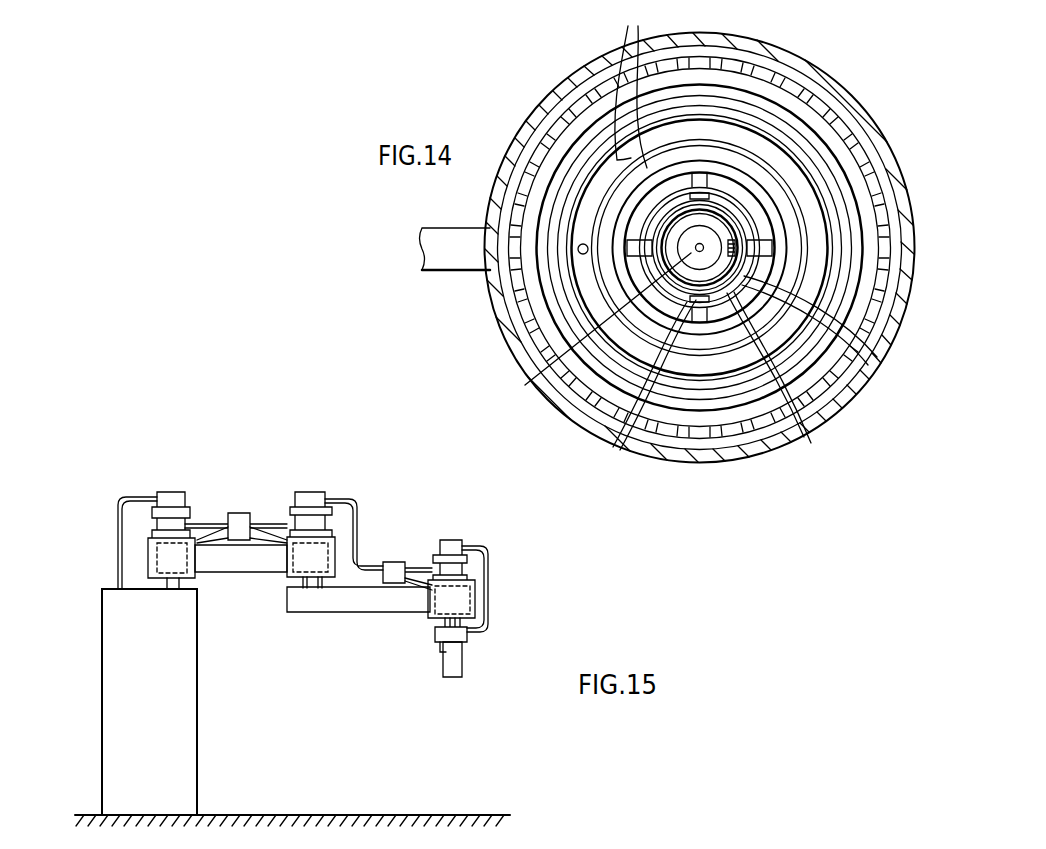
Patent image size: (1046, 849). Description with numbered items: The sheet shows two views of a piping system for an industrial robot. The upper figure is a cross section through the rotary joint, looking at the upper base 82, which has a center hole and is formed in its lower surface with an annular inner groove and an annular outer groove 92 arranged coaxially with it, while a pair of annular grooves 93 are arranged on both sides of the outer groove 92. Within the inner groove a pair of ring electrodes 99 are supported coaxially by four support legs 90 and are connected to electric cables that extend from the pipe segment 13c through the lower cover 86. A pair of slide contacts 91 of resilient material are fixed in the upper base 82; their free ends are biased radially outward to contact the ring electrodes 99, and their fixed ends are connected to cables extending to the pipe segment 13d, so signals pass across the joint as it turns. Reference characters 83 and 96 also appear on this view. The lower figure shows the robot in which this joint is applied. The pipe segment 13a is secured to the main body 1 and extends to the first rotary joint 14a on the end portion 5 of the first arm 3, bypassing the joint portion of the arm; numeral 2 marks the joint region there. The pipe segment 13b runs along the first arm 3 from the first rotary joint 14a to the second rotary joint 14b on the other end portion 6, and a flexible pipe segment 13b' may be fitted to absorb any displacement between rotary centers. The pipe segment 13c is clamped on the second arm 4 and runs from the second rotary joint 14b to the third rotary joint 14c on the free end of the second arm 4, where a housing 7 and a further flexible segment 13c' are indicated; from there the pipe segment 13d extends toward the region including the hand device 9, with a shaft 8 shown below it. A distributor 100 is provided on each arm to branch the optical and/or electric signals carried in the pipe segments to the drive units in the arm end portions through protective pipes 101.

In FIG. 14, the upper base 82 is at (873, 135).
In FIG. 14, the roller ring 83 is at (772, 75).
In FIG. 14, the lower cover 86 is at (594, 325).
In FIG. 14, the support legs 90 is at (646, 388).
In FIG. 14, the slide contacts 91 is at (877, 367).
In FIG. 14, the annular outer groove 92 is at (567, 78).
In FIG. 14, the annular grooves 93 is at (621, 91).
In FIG. 14, the ring electrodes 99 is at (811, 443).
In FIG. 15, the main body 1 is at (185, 740).
In FIG. 15, the joint shaft 2 is at (173, 585).
In FIG. 15, the first arm 3 is at (243, 565).
In FIG. 15, the second arm 4 is at (343, 605).
In FIG. 15, the end portion 5 is at (148, 553).
In FIG. 15, the end portion 6 is at (282, 563).
In FIG. 15, the third joint housing 7 is at (473, 600).
In FIG. 15, the wrist shaft 8 is at (440, 652).
In FIG. 15, the hand device 9 is at (466, 640).
In FIG. 15, the pipe segment 13a is at (136, 496).
In FIG. 15, the pipe segment 13b is at (199, 486).
In FIG. 15, the flexible pipe segment 13b' is at (268, 486).
In FIG. 15, the pipe segment 13c is at (354, 510).
In FIG. 15, the conduit 13c' is at (404, 522).
In FIG. 15, the pipe segment 13d is at (483, 545).
In FIG. 15, the first rotary joint 14a is at (168, 493).
In FIG. 15, the second rotary joint 14b is at (316, 497).
In FIG. 15, the third rotary joint 14c is at (458, 540).
In FIG. 15, the brace 96 is at (413, 588).
In FIG. 15, the distributor 100 is at (378, 536).
In FIG. 15, the protective pipes 101 is at (218, 538).